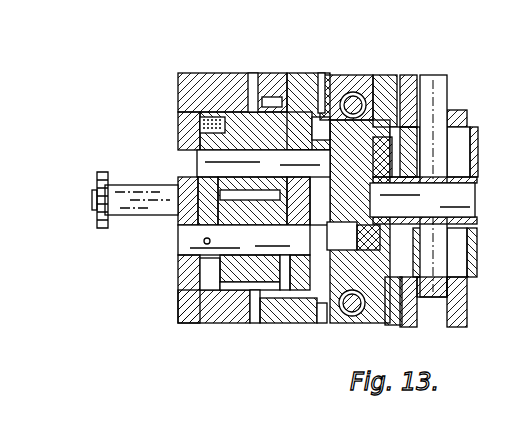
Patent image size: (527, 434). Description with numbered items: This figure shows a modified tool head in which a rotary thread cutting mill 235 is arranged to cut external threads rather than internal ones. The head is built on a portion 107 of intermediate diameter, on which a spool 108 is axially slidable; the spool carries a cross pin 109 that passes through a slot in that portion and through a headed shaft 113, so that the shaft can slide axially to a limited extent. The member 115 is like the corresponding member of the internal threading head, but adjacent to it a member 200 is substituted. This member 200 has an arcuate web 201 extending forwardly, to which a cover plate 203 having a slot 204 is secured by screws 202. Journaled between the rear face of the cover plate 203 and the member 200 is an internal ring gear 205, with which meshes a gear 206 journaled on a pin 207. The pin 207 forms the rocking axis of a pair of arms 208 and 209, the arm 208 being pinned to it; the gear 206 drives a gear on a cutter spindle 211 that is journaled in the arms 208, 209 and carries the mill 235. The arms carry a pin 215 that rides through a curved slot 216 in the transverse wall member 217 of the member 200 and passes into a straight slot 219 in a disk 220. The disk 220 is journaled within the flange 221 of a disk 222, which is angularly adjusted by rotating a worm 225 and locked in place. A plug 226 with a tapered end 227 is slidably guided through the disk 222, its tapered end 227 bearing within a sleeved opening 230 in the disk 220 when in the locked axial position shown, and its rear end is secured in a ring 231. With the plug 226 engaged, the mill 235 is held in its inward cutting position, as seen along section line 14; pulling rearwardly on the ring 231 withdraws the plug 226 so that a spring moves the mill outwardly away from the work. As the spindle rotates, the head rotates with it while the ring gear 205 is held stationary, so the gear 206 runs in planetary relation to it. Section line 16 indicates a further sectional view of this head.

The section line 14- 14 is at (84, 219).
The section line 16- 16 is at (242, 66).
The portion of the tool carrying head 107 is at (468, 125).
The spool 108 is at (460, 330).
The cross pin 109 is at (440, 267).
The headed shaft 113 is at (460, 198).
The member 115 is at (396, 310).
The member 200 is at (352, 76).
The arcuate web 201 is at (238, 112).
The screws 202 is at (182, 110).
The cover plate 203 is at (185, 325).
The slot 204 is at (207, 183).
The internal ring gear 205 is at (268, 323).
The gear 206 is at (200, 278).
The pin 207 is at (190, 245).
The arm 208 is at (207, 168).
The arm 209 is at (275, 322).
The cutter spindle 211 is at (137, 207).
The pin 215 is at (195, 170).
The curved slot 216 is at (326, 210).
The transverse wall member 217 is at (293, 102).
The straight slot 219 is at (320, 140).
The disk 220 is at (327, 292).
The flange 221 is at (318, 100).
The disk 222 is at (393, 110).
The worm 225 is at (353, 103).
The plug 226 is at (363, 247).
The tapered end 227 is at (318, 240).
The sleeved opening 230 is at (318, 323).
The ring 231 is at (392, 158).
The thread cutting mill 235 is at (103, 172).